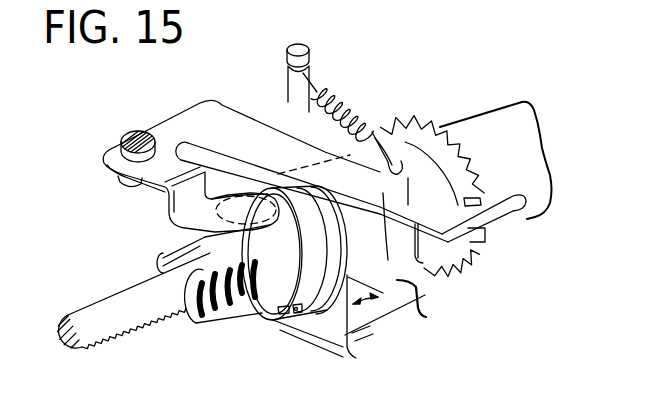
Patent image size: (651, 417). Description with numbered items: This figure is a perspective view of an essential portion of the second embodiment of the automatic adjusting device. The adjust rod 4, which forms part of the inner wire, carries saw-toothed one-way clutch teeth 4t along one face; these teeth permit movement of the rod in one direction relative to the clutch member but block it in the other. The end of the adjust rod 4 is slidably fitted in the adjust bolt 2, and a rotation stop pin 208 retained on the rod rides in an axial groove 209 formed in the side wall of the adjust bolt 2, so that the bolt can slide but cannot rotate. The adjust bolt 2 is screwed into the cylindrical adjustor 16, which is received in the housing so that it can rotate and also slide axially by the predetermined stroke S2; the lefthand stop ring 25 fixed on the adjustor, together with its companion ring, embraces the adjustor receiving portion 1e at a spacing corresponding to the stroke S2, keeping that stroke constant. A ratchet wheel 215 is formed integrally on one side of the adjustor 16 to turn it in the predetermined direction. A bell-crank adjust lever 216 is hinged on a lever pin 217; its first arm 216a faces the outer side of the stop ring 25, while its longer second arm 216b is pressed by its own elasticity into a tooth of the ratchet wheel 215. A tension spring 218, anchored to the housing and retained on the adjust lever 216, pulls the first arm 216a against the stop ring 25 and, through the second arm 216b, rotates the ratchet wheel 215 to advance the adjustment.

The adjust lever 216 is at (245, 119).
The lever pin 217 is at (140, 137).
The first arm 216a is at (252, 203).
The second arm 216b is at (389, 196).
The tension spring 218 is at (349, 108).
The ratchet wheel 215 is at (423, 125).
The adjustor 16 is at (482, 127).
The adjust rod 4 is at (107, 307).
The one-way clutch teeth 4t is at (127, 332).
The adjust bolt 2 is at (215, 322).
The rotation stop pin 208 is at (201, 246).
The axial groove 209 is at (160, 265).
The stop ring 25 is at (307, 302).
The predetermined stroke S2 is at (385, 306).
The adjustor receiving portion 1e is at (422, 297).